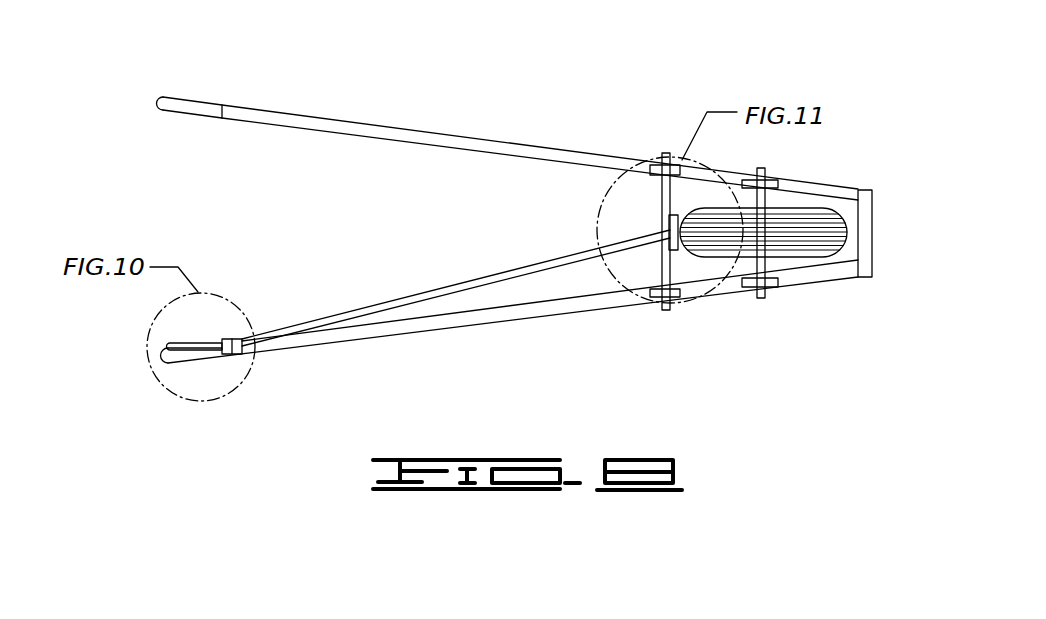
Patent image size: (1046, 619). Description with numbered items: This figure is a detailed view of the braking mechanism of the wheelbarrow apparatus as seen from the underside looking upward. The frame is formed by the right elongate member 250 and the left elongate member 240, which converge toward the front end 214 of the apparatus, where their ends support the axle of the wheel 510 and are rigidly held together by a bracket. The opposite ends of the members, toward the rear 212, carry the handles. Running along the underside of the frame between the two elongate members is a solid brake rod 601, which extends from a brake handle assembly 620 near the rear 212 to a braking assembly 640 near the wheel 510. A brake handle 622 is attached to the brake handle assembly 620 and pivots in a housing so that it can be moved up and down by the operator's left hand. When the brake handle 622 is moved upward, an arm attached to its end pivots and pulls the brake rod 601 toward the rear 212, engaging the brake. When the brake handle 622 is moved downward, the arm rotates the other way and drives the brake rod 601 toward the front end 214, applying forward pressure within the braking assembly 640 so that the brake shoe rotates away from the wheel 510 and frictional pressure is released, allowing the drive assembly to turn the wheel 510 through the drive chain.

The rear 212 is at (180, 195).
The front end 214 is at (852, 165).
The left elongate member 240 is at (368, 342).
The right elongate member 250 is at (340, 102).
The wheel 510 is at (850, 230).
The brake rod 601 is at (410, 293).
The brake handle assembly 620 is at (232, 297).
The brake handle 622 is at (183, 350).
The braking assembly 640 is at (597, 208).